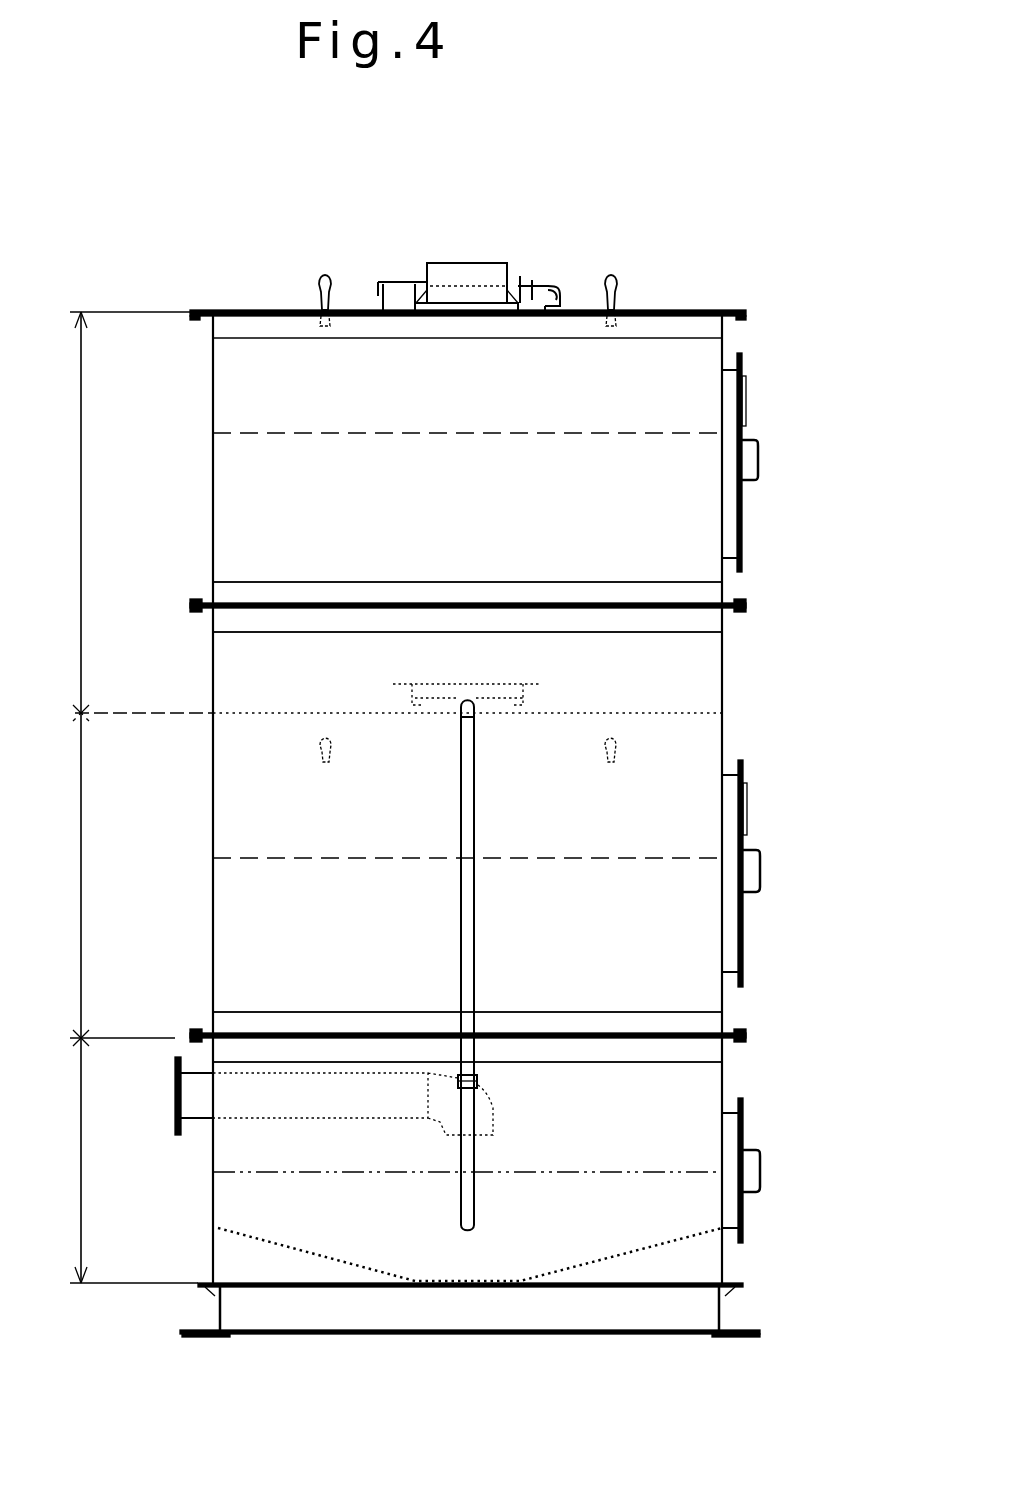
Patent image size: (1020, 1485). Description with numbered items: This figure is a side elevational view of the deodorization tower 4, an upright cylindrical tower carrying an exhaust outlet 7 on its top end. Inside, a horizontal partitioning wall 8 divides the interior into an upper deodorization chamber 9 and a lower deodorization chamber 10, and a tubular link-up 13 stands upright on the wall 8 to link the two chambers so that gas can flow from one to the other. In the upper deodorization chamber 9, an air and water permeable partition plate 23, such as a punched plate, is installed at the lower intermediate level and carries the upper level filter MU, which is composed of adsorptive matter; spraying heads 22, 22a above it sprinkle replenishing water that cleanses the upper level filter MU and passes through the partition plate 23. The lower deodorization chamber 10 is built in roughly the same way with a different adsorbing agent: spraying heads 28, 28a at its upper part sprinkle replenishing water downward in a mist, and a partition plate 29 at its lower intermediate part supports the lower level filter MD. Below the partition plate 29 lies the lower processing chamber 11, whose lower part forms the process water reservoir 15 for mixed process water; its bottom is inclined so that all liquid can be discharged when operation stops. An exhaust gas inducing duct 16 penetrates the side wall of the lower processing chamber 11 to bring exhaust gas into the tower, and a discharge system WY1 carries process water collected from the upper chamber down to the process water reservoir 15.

The deodorization tower 4 is at (405, 238).
The exhaust outlet 7 is at (475, 272).
The horizontal partitioning wall 8 is at (245, 714).
The upper deodorization chamber 9 is at (389, 516).
The lower deodorization chamber 10 is at (385, 879).
The lower processing chamber 11 is at (388, 1160).
The link-up 13 is at (415, 700).
The process water reservoir 15 is at (655, 1200).
The exhaust gas inducing duct 16 is at (290, 1100).
The spraying head 22 is at (318, 318).
The spraying head 22a is at (618, 322).
The partition plate 23 is at (658, 580).
The spraying head 28 is at (318, 755).
The spraying head 28a is at (618, 748).
The partition plate 29 is at (648, 1016).
The upper level filter MU is at (672, 522).
The lower level filter MD is at (660, 928).
The discharge system WY1 is at (462, 912).